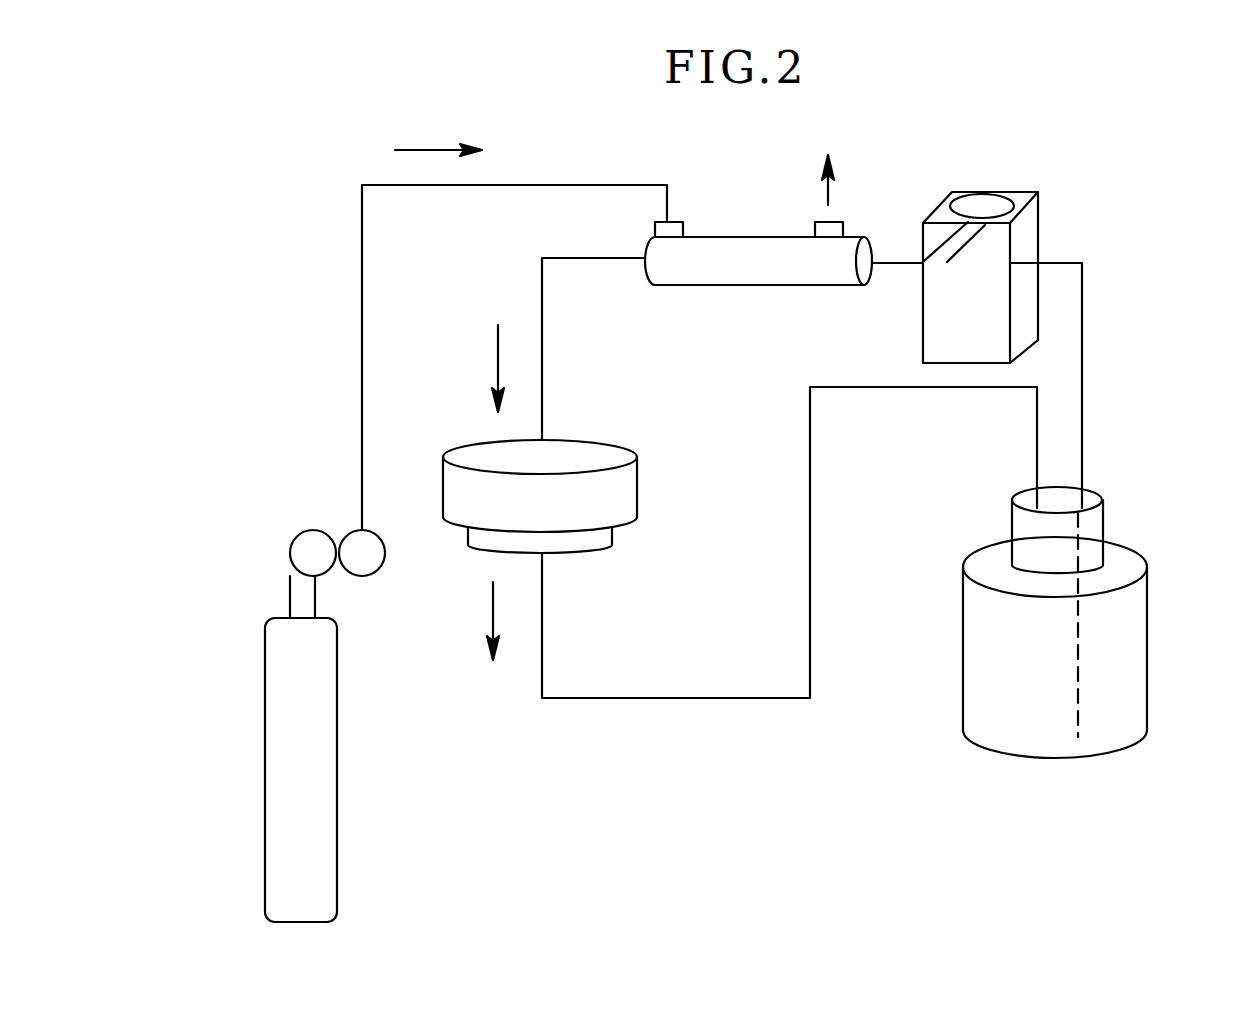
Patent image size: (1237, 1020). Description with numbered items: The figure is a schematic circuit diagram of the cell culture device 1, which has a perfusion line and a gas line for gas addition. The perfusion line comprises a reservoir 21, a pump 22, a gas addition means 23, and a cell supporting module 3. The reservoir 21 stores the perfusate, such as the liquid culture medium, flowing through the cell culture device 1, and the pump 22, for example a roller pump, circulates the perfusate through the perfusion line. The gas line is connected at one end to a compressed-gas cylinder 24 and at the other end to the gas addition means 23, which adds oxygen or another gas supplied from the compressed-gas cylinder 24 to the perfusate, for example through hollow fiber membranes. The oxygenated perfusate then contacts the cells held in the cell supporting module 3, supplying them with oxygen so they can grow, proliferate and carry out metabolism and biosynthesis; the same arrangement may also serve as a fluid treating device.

The cell culture device 1 is at (698, 805).
The cell supporting module 3 is at (627, 503).
The reservoir 21 is at (1127, 695).
The pump 22 is at (1027, 232).
The gas addition means 23 is at (735, 260).
The compressed-gas cylinder 24 is at (323, 832).